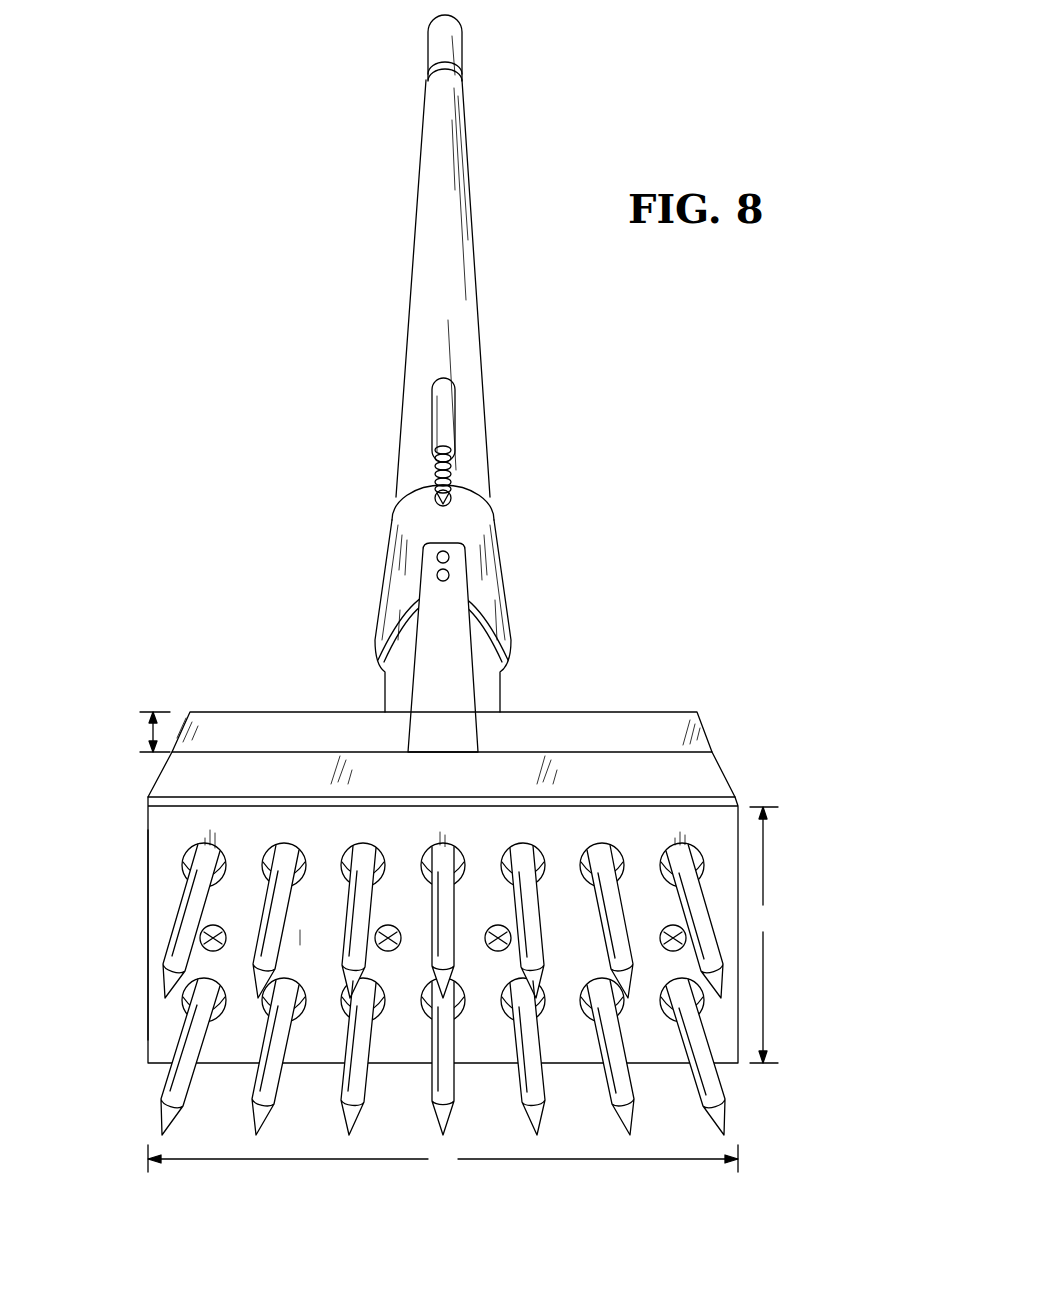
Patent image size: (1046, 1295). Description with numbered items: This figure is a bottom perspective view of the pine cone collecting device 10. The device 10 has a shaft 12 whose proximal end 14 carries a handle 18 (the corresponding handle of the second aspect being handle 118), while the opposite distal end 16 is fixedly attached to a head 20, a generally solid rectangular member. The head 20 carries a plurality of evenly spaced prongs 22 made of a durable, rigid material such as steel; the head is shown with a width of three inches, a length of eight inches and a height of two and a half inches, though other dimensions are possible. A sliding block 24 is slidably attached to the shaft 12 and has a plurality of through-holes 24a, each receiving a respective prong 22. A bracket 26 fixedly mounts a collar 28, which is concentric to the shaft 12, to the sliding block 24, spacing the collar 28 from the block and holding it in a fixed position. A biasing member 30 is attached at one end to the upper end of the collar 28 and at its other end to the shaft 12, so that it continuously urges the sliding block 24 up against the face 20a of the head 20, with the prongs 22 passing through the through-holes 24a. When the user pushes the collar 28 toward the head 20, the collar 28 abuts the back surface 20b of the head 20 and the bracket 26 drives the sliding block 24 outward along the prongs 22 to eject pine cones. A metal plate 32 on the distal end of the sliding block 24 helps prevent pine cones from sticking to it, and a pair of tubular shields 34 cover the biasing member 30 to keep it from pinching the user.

The device 10 is at (612, 130).
The shaft 12 is at (497, 191).
The proximal end 14 is at (475, 45).
The distal end 16 is at (503, 694).
The handle 18 is at (402, 45).
The handle 118 is at (402, 45).
The head 20 is at (730, 722).
The face 20a is at (708, 762).
The back surface 20b is at (647, 712).
The prongs 22 is at (146, 1106).
The sliding block 24 is at (753, 780).
The through-holes 24a is at (688, 845).
The bracket 26 is at (428, 663).
The collar 28 is at (496, 548).
The biasing member 30 is at (450, 470).
The metal plate 32 is at (158, 845).
The shields 34 is at (445, 427).